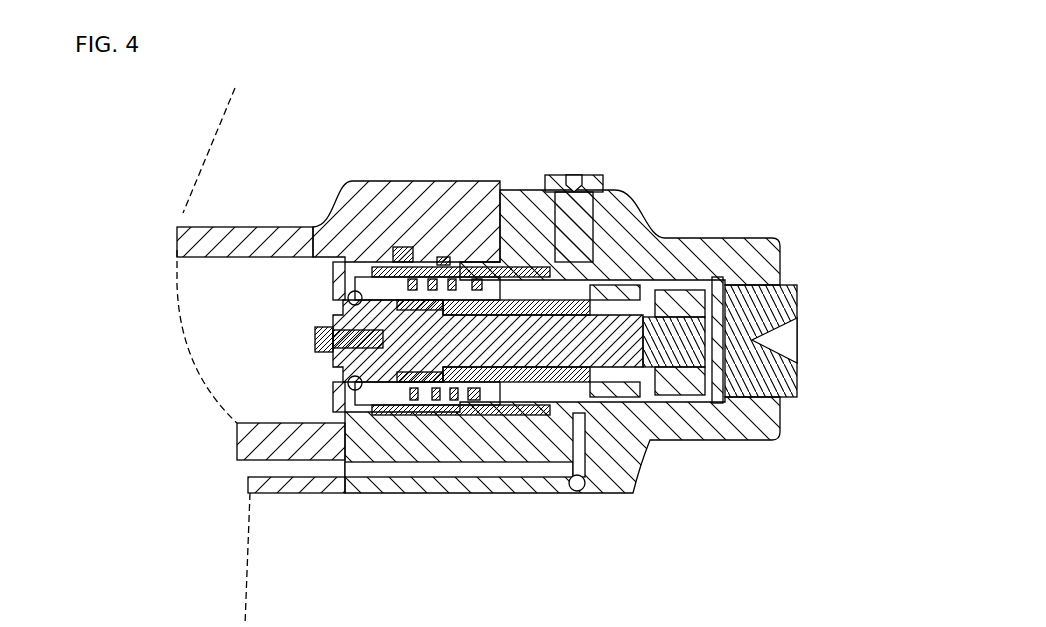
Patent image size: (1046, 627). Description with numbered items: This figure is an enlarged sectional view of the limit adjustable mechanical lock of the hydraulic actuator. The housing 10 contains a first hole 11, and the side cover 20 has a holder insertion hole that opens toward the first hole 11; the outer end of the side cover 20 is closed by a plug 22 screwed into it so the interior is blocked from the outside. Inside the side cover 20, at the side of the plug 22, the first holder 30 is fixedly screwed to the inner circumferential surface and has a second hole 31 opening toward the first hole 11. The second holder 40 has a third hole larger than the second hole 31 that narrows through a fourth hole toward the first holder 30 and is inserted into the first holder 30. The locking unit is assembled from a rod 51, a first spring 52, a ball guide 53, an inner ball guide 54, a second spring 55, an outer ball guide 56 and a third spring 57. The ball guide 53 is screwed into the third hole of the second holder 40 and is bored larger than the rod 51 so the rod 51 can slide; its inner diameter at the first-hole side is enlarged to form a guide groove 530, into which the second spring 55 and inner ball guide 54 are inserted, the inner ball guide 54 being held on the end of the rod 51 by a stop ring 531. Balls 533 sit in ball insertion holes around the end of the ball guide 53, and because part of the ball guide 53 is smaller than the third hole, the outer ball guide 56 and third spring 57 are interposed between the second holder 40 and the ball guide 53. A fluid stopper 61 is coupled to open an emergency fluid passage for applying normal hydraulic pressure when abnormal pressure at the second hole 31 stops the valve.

The housing 10 is at (347, 210).
The first hole 11 is at (267, 280).
The side cover 20 is at (500, 190).
The plug 22 is at (750, 357).
The first holder 30 is at (645, 270).
The second hole 31 is at (605, 265).
The second holder 40 is at (512, 413).
The rod 51 is at (565, 413).
The first spring 52 is at (660, 380).
The ball guide 53 is at (478, 415).
The inner ball guide 54 is at (342, 455).
The second spring 55 is at (385, 440).
The outer ball guide 56 is at (412, 248).
The third spring 57 is at (452, 235).
The fluid stopper 61 is at (572, 178).
The guide groove 530 is at (422, 200).
The stop ring 531 is at (333, 362).
The balls 533 is at (358, 255).